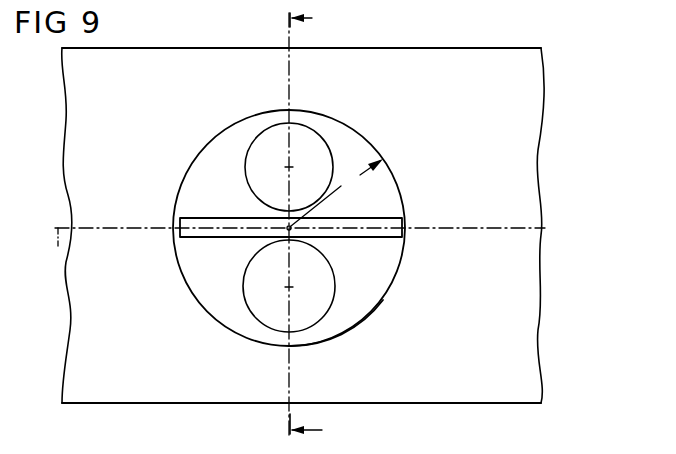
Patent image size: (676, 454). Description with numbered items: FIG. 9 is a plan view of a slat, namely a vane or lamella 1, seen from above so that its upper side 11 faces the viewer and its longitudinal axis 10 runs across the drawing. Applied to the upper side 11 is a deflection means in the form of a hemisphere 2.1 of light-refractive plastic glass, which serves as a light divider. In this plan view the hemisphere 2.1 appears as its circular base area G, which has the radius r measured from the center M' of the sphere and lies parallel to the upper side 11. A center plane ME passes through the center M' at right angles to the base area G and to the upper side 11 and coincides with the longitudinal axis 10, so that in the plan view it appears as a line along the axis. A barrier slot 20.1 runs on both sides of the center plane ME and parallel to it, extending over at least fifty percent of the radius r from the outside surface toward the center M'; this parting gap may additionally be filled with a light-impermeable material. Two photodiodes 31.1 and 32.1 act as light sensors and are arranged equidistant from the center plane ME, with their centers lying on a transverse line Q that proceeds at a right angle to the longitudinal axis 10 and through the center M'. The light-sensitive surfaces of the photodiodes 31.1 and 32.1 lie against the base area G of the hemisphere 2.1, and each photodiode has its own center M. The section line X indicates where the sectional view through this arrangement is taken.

The vane or lamella 1 is at (62, 156).
The longitudinal axis 10 is at (58, 247).
The upper side 11 is at (452, 68).
The hemisphere 2.1 is at (368, 316).
The barrier slot 20.1 is at (378, 232).
The photodiode 31.1 is at (327, 146).
The photodiode 32.1 is at (248, 305).
The base area G is at (380, 180).
The radius r is at (337, 192).
The hole center M is at (288, 229).
The center of the sphere M' is at (251, 205).
The transverse line Q is at (287, 84).
The section line X is at (315, 225).
The center plane ME is at (503, 225).